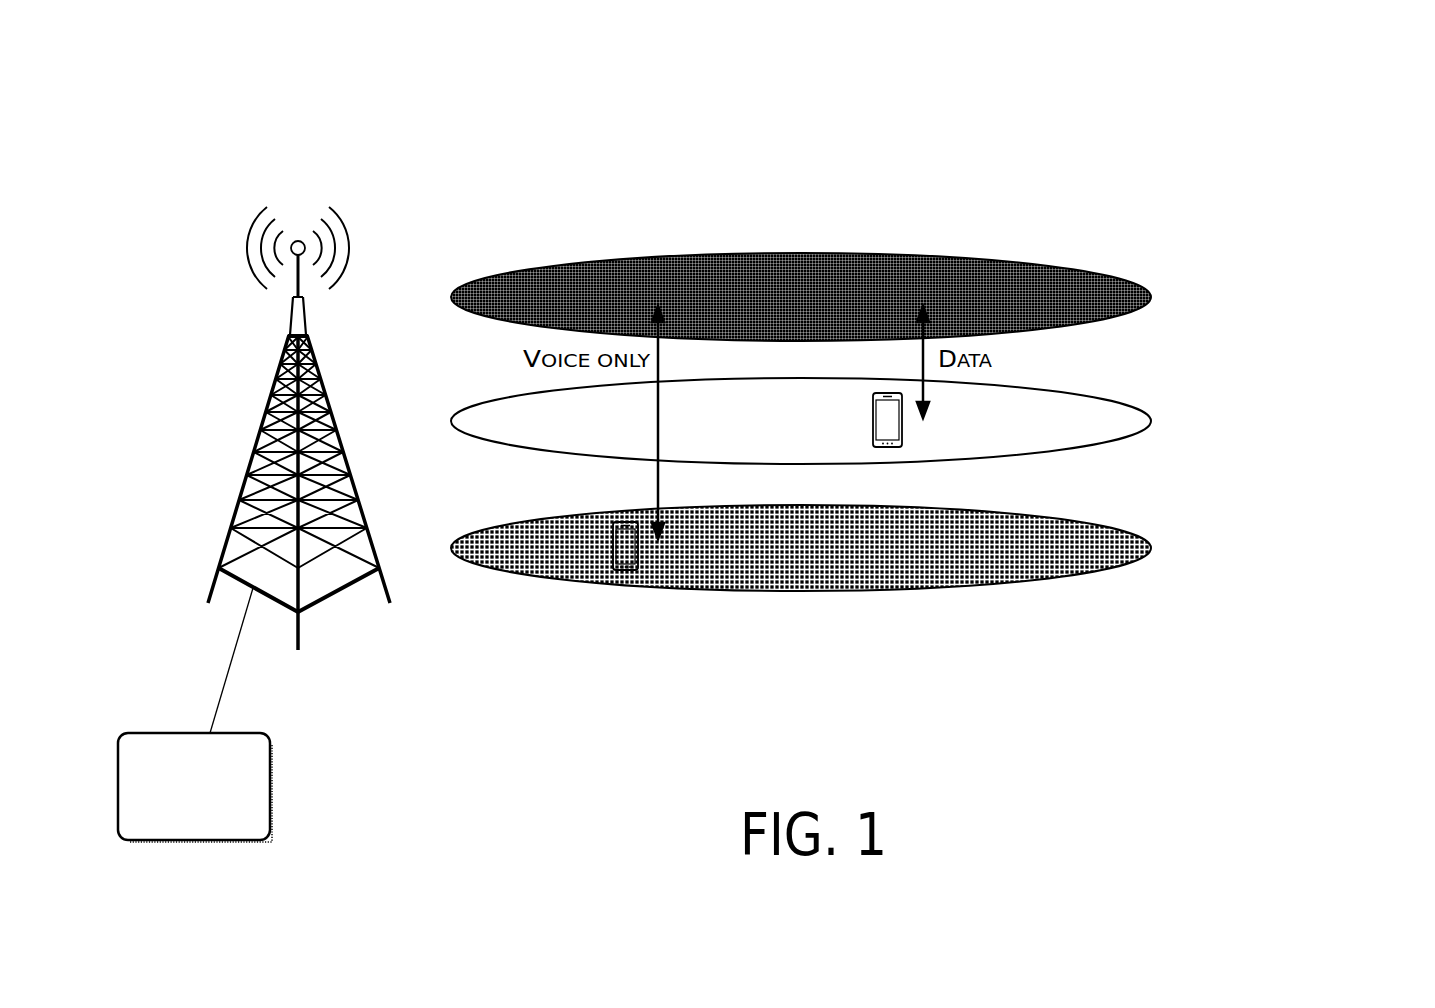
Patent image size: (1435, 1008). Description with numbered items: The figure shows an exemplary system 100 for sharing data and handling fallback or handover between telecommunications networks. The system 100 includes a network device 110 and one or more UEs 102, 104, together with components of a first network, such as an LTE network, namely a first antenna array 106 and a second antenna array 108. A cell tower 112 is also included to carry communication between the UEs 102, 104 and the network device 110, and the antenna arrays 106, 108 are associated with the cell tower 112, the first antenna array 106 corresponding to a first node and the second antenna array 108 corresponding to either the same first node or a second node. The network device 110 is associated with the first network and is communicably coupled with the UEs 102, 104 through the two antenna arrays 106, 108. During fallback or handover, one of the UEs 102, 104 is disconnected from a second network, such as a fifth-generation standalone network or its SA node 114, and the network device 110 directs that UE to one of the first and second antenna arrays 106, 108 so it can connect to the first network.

The system 100 is at (221, 111).
The UE 102 is at (892, 425).
The UE 104 is at (620, 548).
The first antenna array 106 is at (1049, 381).
The second antenna array 108 is at (1012, 586).
The network device 110 is at (272, 786).
The cell tower 112 is at (266, 412).
The 5G SA node 114 is at (1049, 256).